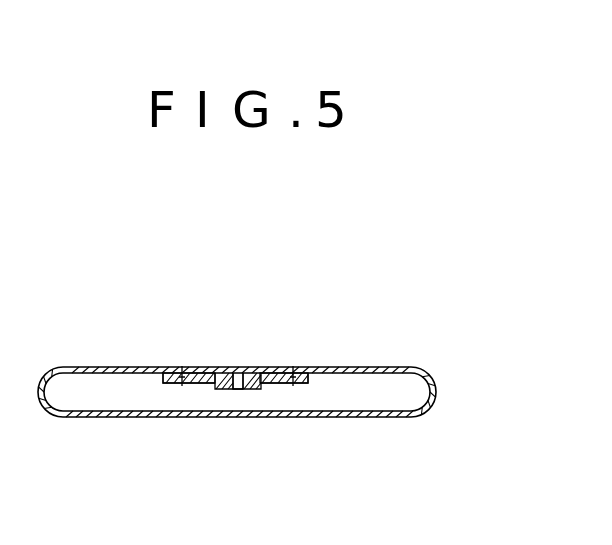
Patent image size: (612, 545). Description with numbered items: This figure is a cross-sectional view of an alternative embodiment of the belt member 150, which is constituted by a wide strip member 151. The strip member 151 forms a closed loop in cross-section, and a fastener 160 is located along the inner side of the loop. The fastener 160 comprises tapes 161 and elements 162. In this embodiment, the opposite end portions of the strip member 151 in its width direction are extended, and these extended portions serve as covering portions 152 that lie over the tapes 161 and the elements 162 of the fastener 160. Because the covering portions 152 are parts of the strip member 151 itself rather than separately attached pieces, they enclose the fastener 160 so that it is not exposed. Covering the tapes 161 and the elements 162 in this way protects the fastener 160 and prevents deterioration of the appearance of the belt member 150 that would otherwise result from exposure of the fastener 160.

The belt member 150 is at (237, 377).
The strip member 151 is at (233, 414).
The covering portions 152 is at (202, 372).
The fastener 160 is at (238, 372).
The tapes 161 is at (197, 384).
The elements 162 is at (255, 390).